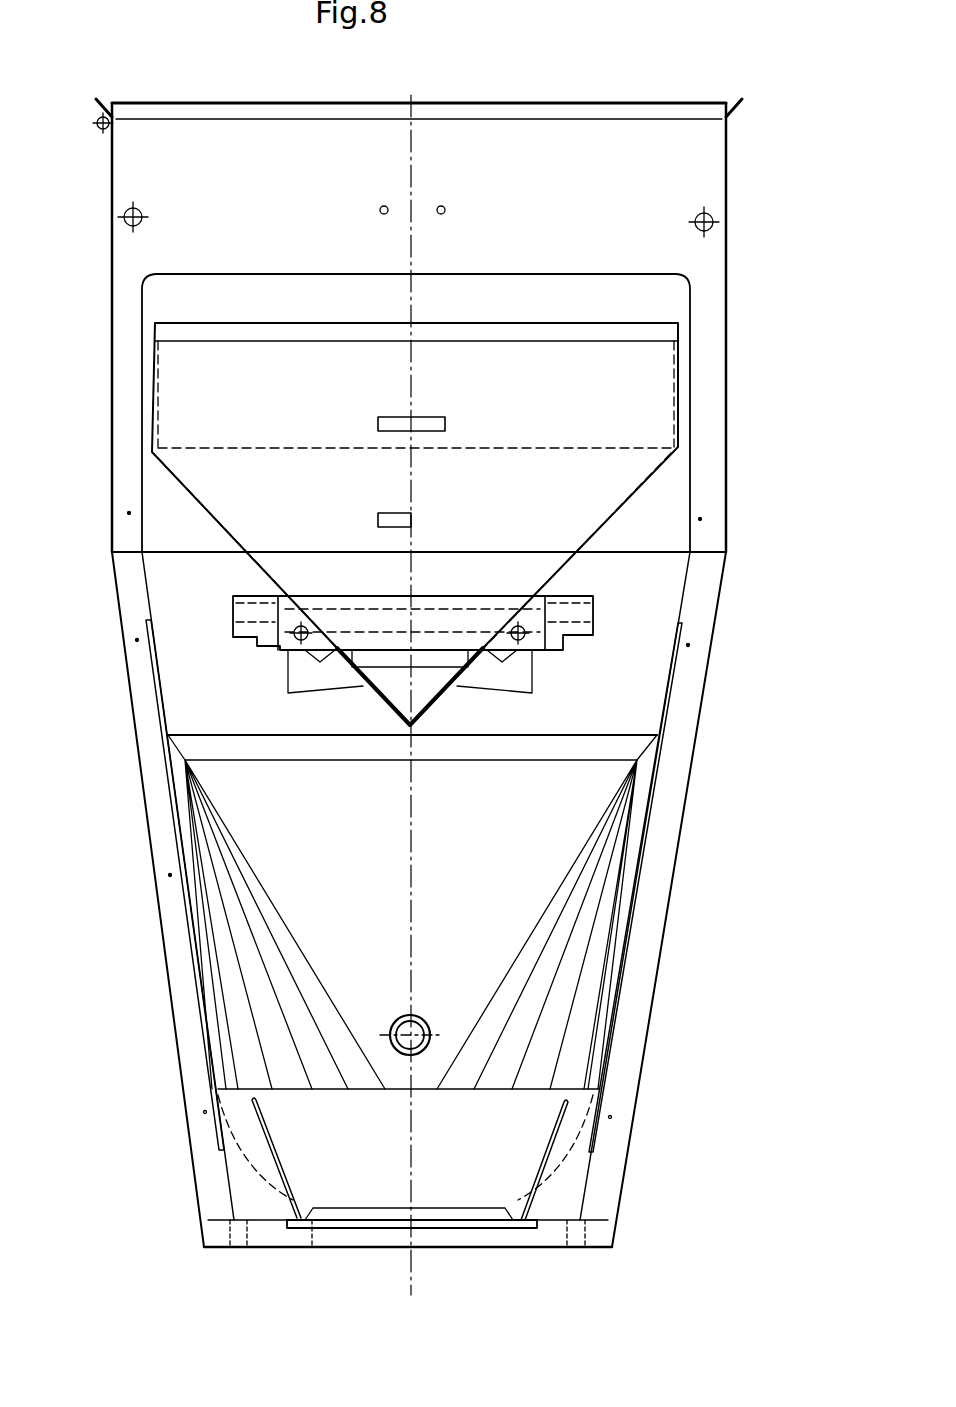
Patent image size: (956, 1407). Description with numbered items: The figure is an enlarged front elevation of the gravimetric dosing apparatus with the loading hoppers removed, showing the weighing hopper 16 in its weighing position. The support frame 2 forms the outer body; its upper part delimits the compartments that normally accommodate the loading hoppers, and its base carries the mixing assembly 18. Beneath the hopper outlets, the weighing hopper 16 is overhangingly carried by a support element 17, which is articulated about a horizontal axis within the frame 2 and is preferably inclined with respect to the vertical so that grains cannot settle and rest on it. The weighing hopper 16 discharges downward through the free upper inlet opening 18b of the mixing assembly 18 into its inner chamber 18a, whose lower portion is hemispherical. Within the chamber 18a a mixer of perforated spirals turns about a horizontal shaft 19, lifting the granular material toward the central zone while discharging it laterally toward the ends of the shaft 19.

The support frame 2 is at (729, 162).
The weighing hopper 16 is at (658, 400).
The support element 17 is at (594, 619).
The mixing assembly 18 is at (245, 1161).
The inner chamber 18a is at (503, 1207).
The upper inlet opening 18b is at (598, 748).
The horizontal shaft 19 is at (418, 1018).